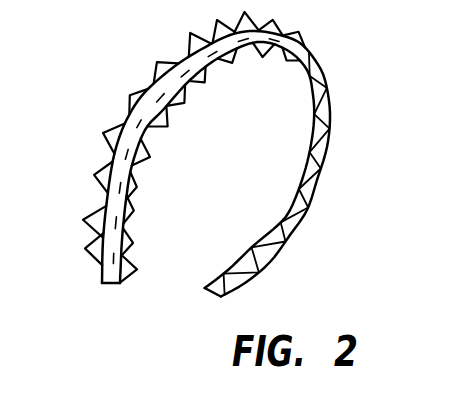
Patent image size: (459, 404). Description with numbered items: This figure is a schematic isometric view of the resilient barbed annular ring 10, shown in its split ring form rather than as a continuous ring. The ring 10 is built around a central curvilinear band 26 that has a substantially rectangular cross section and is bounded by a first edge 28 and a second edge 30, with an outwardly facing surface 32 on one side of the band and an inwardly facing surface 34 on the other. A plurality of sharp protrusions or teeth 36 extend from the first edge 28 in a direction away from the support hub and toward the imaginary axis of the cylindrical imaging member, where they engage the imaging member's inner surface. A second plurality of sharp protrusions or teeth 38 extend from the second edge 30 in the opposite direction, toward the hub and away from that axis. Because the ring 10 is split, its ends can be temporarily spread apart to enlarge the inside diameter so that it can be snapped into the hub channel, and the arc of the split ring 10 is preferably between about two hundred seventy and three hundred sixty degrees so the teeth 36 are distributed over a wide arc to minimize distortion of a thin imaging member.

The barbed annular ring 10 is at (135, 29).
The central curvilinear band 26 is at (121, 300).
The first edge 28 is at (110, 163).
The second edge 30 is at (128, 171).
The outwardly facing surface 32 is at (107, 222).
The inwardly facing surface 34 is at (247, 268).
The sharp protrusions or teeth 36 is at (93, 180).
The sharp protrusions or teeth 38 is at (137, 192).